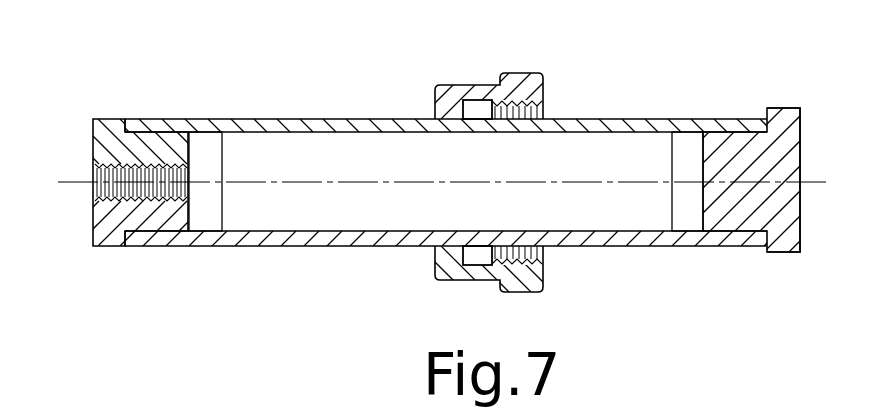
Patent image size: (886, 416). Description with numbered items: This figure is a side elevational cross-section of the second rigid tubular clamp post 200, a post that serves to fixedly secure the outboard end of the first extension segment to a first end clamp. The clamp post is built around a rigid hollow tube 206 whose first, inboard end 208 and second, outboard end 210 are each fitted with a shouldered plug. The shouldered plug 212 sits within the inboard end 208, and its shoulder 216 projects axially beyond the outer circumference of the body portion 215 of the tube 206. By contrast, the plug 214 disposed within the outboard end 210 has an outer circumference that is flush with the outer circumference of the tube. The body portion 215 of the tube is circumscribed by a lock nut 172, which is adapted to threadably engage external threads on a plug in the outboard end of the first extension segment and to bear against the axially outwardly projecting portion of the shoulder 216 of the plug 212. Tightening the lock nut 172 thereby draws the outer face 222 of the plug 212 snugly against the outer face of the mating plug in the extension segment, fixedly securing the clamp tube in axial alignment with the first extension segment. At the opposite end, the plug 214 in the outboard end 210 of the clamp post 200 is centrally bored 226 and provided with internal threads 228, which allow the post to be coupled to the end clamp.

The second rigid tubular clamp post 200 is at (310, 90).
The lock nut 172 is at (467, 88).
The rigid hollow tube 206 is at (318, 232).
The first (inboard) end 208 is at (650, 118).
The second (outboard) end 210 is at (152, 122).
The shouldered plug 212 is at (780, 168).
The shouldered plug 214 is at (113, 140).
The body portion 215 is at (580, 117).
The shoulder 216 is at (800, 117).
The outer face 222 is at (802, 232).
The central bore 226 is at (93, 215).
The internal threads 228 is at (93, 190).